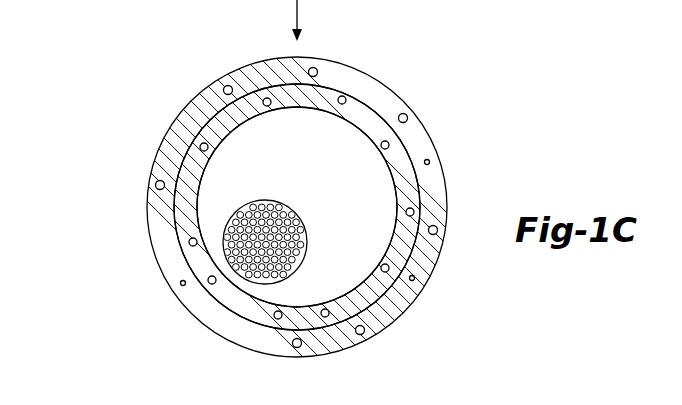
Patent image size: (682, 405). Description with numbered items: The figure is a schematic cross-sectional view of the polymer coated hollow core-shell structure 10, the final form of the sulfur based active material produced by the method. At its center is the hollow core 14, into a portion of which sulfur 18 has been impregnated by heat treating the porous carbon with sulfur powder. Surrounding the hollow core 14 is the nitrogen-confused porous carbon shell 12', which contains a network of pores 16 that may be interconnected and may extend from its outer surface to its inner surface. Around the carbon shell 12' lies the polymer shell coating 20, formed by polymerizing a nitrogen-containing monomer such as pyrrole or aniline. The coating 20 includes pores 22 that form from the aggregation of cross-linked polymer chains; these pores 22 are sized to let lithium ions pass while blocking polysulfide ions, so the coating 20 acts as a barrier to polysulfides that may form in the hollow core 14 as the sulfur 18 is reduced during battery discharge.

The polymer coated hollow core-shell structure 10 is at (412, 65).
The nitrogen-confused porous carbon shell 12' is at (291, 207).
The hollow core 14 is at (337, 158).
The pores 16 is at (386, 269).
The sulfur 18 is at (264, 242).
The polymer shell coating 20 is at (438, 191).
The pores 22 is at (359, 336).